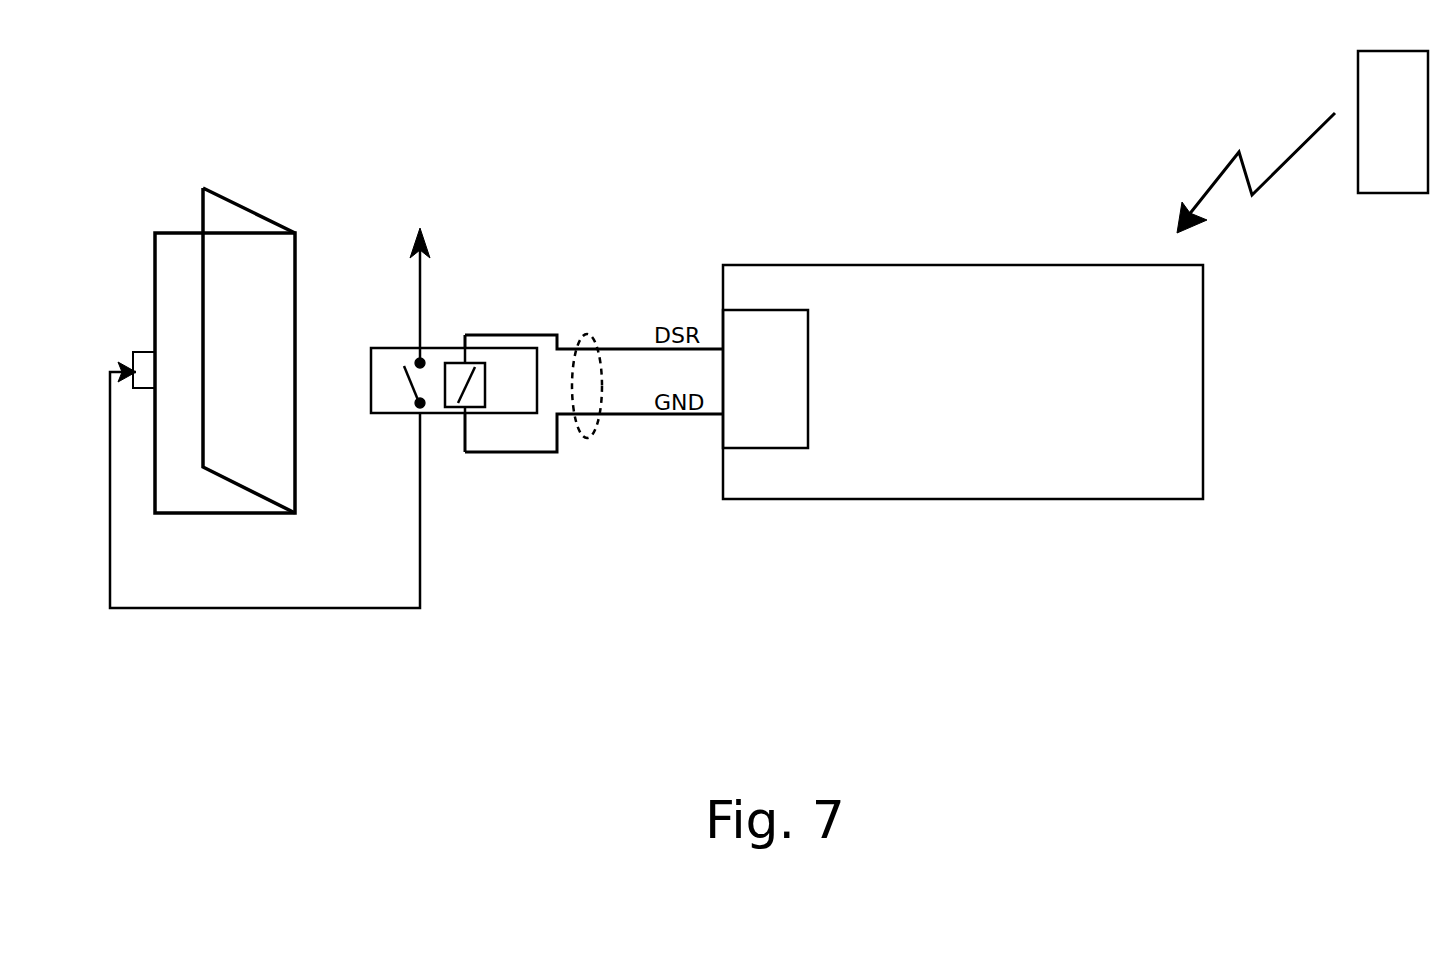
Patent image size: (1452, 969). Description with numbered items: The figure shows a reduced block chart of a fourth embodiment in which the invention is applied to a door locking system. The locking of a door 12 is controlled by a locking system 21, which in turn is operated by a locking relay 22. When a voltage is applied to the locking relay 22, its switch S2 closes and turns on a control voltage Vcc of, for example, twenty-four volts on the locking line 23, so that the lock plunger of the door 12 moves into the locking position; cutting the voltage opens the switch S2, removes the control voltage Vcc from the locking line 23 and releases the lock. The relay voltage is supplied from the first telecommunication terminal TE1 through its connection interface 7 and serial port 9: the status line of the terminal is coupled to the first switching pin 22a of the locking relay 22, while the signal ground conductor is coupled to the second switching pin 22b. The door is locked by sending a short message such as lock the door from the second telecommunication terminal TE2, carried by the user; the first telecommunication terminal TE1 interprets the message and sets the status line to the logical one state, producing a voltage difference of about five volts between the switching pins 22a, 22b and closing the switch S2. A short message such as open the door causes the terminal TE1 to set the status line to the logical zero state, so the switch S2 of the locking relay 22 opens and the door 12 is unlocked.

The door 12 is at (245, 210).
The locking system 21 is at (145, 352).
The locking relay 22 is at (388, 348).
The first switching pin 22a is at (465, 335).
The second switching pin 22b is at (465, 430).
The locking line 23 is at (372, 610).
The serial port 9 is at (590, 440).
The connection interface 7 is at (770, 450).
The switch of the locking relay S2 is at (408, 383).
The control voltage Vcc is at (417, 284).
The first telecommunication terminal TE1 is at (836, 262).
The second telecommunication terminal TE2 is at (1415, 195).